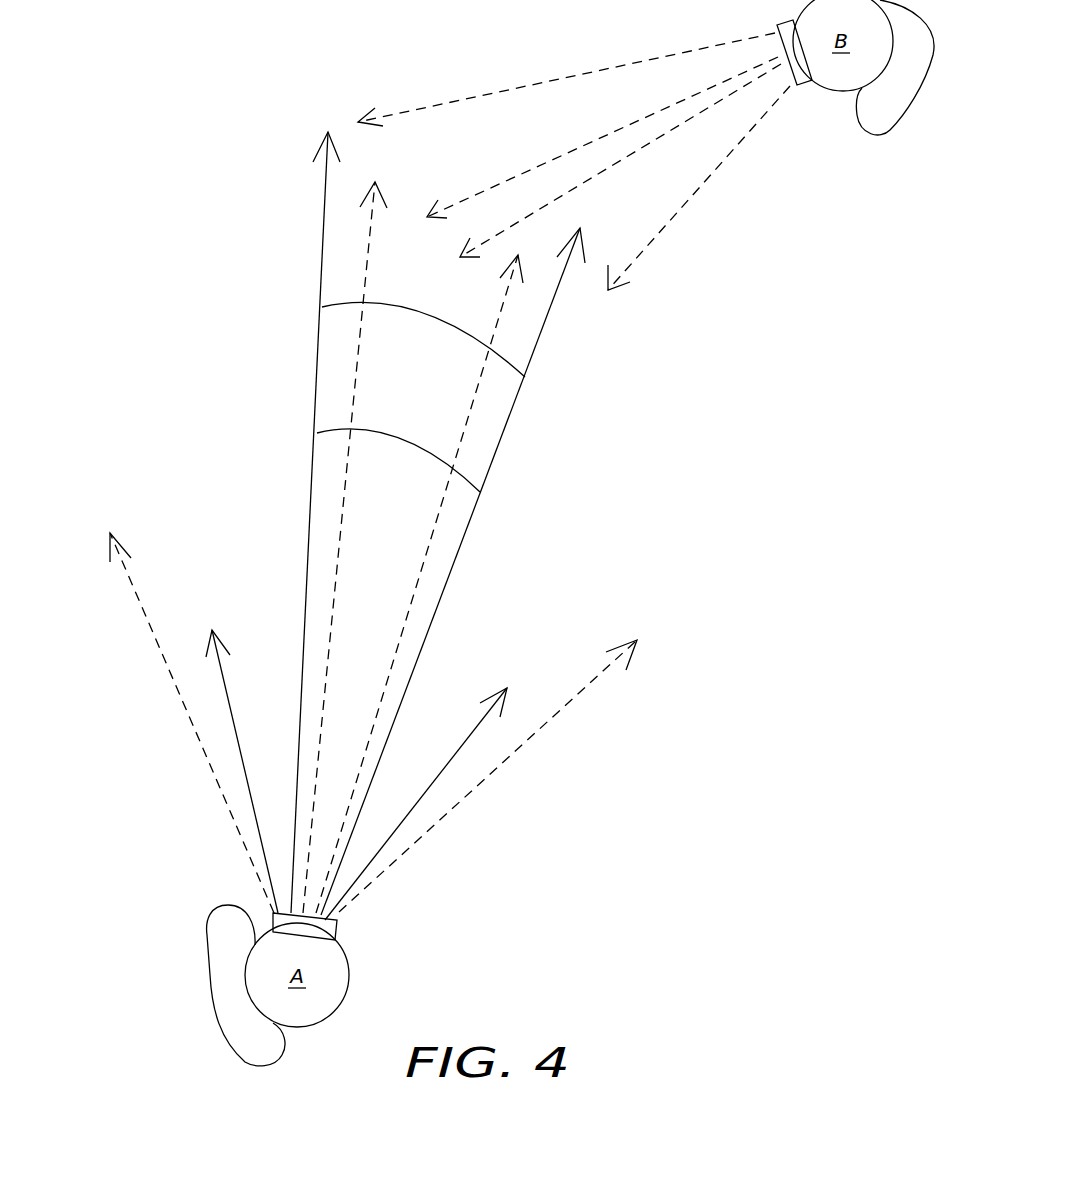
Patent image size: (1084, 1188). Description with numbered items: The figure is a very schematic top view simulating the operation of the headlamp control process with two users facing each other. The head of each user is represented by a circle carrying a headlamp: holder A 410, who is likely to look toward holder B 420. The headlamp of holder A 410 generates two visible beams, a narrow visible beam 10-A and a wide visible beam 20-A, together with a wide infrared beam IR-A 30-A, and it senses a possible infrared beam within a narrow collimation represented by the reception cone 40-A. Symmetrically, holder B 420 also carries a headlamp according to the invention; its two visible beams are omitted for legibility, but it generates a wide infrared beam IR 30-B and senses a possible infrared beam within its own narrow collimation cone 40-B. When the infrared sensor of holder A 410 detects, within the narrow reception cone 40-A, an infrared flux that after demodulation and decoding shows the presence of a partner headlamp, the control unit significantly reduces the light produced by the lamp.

The narrow visible beam 10-A is at (540, 340).
The wide visible beam 20-A is at (233, 712).
The wide infrared beam IR-A 30-A is at (167, 663).
The narrow reception cone 40-A is at (360, 338).
The wide infrared beam IR 30-B is at (547, 82).
The narrow collimation cone 40-B is at (557, 158).
The holder A 410 is at (277, 1062).
The holder B 420 is at (875, 135).